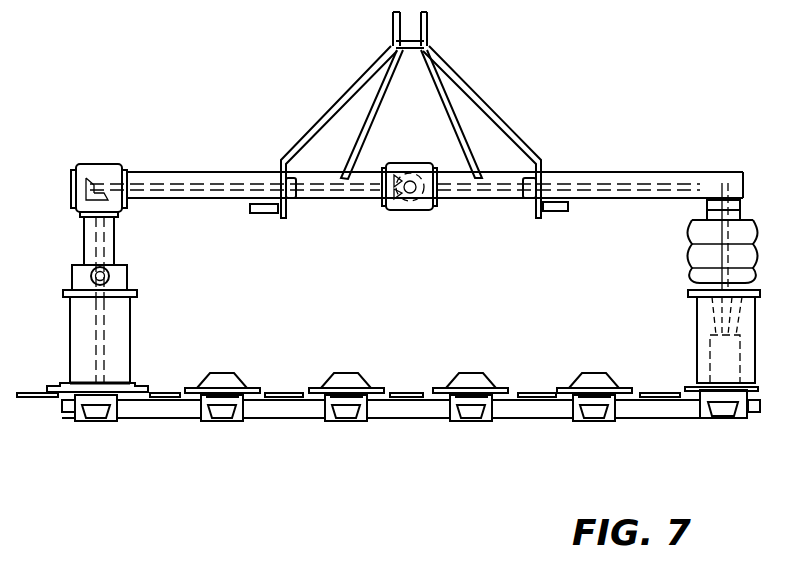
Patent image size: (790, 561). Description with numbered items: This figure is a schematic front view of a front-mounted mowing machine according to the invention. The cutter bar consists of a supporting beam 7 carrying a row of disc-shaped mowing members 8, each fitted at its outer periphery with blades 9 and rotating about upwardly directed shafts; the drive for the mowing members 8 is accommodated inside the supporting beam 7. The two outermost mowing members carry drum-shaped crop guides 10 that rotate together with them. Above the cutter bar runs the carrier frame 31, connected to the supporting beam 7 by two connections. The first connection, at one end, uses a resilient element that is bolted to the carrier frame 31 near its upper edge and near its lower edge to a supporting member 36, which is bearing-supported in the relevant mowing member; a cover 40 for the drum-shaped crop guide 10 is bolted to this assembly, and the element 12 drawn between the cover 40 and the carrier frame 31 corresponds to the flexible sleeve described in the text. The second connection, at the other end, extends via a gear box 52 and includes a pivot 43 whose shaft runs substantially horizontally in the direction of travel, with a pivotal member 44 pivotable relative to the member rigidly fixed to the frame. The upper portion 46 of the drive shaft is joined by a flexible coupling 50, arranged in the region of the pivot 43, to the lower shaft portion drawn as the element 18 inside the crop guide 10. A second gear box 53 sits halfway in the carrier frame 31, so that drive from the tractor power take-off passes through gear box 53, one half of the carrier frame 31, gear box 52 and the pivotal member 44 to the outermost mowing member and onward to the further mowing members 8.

The supporting beam 7 is at (429, 434).
The mowing members 8 is at (150, 380).
The blades 9 is at (33, 392).
The drum-shaped crop guides 10 is at (125, 318).
The bellows 12 is at (695, 237).
The piston rod 18 is at (100, 336).
The carrier frame 31 is at (592, 170).
The supporting member 36 is at (710, 353).
The cover 40 is at (690, 293).
The pivot 43 is at (109, 277).
The pivotal member 44 is at (110, 270).
The upper portion of the drive shaft 46 is at (85, 236).
The flexible coupling 50 is at (88, 277).
The gear box 52 is at (110, 167).
The second gear box 53 is at (425, 210).